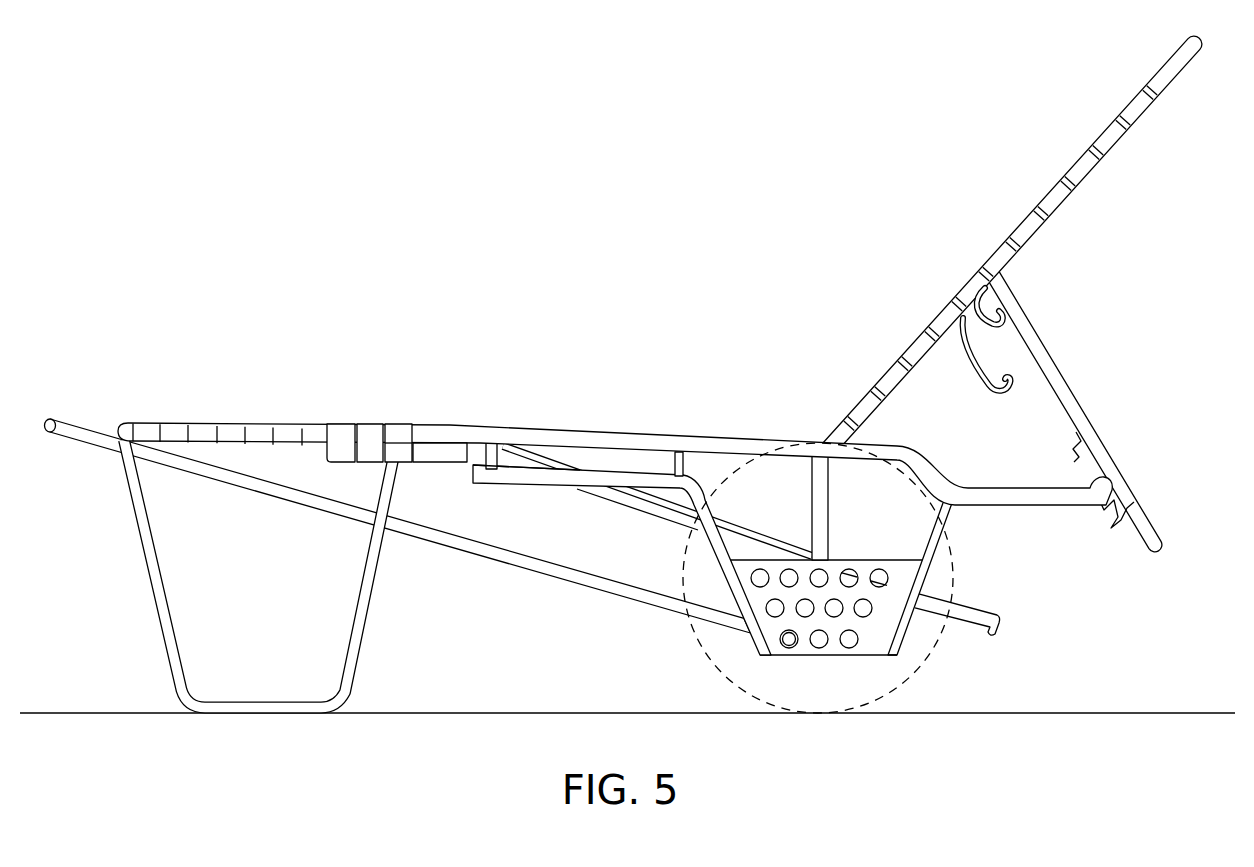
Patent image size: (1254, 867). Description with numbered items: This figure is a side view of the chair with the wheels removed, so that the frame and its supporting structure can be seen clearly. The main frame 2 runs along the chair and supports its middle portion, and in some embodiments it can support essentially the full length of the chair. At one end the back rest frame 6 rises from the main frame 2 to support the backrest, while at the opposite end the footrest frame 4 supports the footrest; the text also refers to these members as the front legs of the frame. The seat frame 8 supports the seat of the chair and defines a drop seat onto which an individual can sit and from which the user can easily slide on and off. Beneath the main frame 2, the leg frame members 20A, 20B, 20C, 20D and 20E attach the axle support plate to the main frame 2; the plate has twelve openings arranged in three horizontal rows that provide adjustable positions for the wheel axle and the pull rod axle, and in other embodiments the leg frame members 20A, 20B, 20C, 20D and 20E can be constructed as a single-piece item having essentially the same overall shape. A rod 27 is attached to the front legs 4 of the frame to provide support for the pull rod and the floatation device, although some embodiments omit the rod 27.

The main frame 2 is at (737, 444).
The footrest frame 4 is at (398, 432).
The back rest frame 6 is at (1197, 53).
The seat frame 8 is at (977, 622).
The leg frame member 20A is at (944, 505).
The leg frame member 20B is at (828, 478).
The leg frame member 20C is at (697, 444).
The leg frame member 20D is at (716, 509).
The leg frame member 20E is at (508, 442).
The rod 27 is at (148, 496).